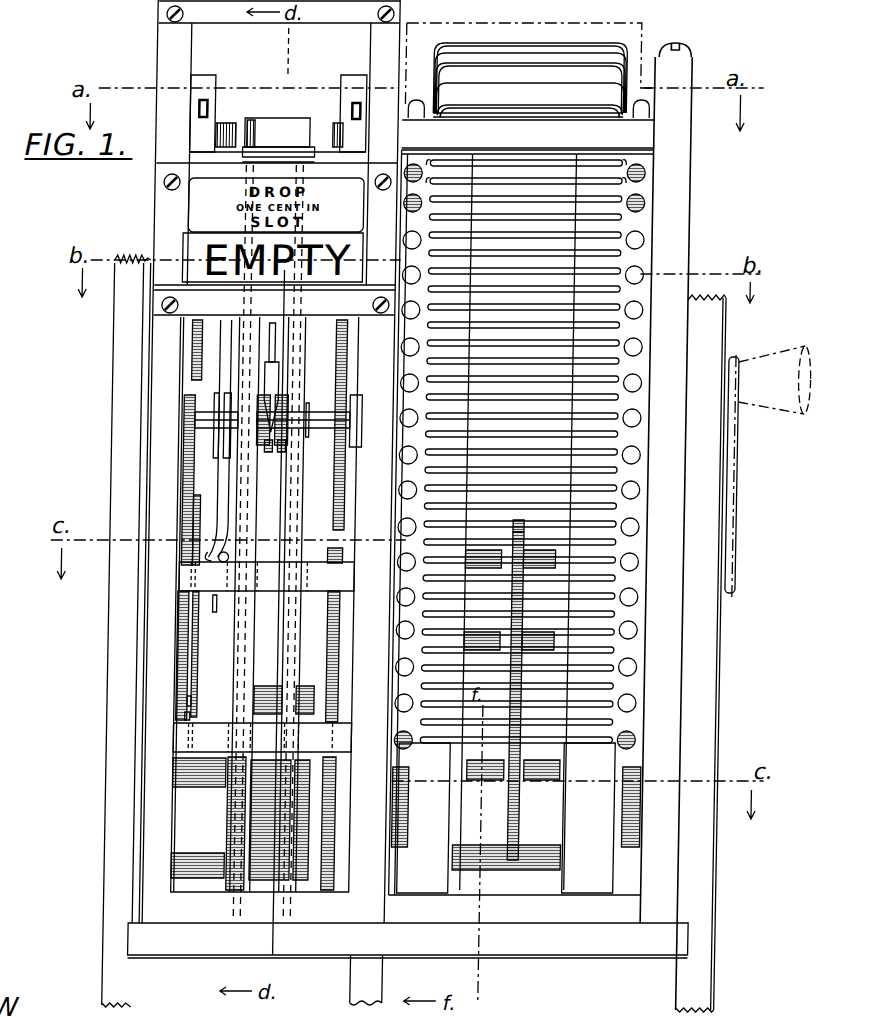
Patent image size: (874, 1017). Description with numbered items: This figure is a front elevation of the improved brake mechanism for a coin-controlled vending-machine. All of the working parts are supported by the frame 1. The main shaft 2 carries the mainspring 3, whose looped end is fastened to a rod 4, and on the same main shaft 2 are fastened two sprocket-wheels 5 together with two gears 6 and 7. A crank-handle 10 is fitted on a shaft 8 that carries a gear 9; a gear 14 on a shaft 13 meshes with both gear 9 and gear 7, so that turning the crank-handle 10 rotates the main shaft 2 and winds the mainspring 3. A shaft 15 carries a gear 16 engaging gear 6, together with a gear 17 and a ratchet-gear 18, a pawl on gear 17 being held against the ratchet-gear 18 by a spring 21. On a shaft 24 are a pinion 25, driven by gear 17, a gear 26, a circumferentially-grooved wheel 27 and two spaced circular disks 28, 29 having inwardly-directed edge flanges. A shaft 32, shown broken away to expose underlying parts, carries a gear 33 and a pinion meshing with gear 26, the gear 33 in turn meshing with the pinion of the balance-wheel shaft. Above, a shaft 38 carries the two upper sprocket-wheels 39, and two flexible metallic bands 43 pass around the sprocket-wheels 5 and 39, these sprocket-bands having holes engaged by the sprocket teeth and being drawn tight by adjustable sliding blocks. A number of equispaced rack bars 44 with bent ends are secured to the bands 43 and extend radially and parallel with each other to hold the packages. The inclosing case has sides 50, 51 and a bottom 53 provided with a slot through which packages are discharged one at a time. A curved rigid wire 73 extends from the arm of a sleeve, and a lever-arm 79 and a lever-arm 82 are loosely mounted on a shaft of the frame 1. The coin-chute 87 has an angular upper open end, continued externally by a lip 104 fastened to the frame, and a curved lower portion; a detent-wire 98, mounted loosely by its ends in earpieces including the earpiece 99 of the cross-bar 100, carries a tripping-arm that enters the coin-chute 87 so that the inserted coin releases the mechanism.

The frame 1 is at (155, 57).
The main shaft 2 is at (216, 784).
The mainspring 3 is at (310, 686).
The rod 4 is at (215, 860).
The sprocket-wheels 5 is at (403, 842).
The gear 6 is at (345, 813).
The gear 7 is at (528, 848).
The shaft 8 is at (553, 572).
The gear 9 is at (528, 530).
The crank-handle 10 is at (768, 471).
The shaft 13 is at (541, 645).
The gear 14 is at (530, 681).
The shaft 15 is at (279, 612).
The gear 16 is at (333, 626).
The gear 17 is at (198, 719).
The ratchet-gear 18 is at (204, 674).
The spring 21 is at (199, 702).
The shaft 24 is at (192, 413).
The pinion 25 is at (186, 401).
The gear 26 is at (337, 497).
The circumferentially-grooved wheel 27 is at (217, 456).
The circular disk 28 is at (270, 453).
The circular disk 29 is at (284, 453).
The shaft 32 is at (151, 257).
The gear 33 is at (192, 362).
The shaft 38 is at (541, 193).
The upper sprocket-wheels 39 is at (415, 100).
The flexible metallic bands 43 is at (640, 298).
The rack bars 44 is at (527, 905).
The side of case 50 is at (113, 700).
The side of case 51 is at (718, 705).
The bottom of case 53 is at (584, 957).
The rigid wire 73 is at (220, 375).
The lever-arm 79 is at (204, 106).
The lever-arm 82 is at (348, 101).
The coin-chute 87 is at (282, 522).
The detent-wire 98 is at (217, 557).
The earpiece 99 is at (235, 557).
The cross-bar 100 is at (267, 576).
The lip 104 is at (277, 140).